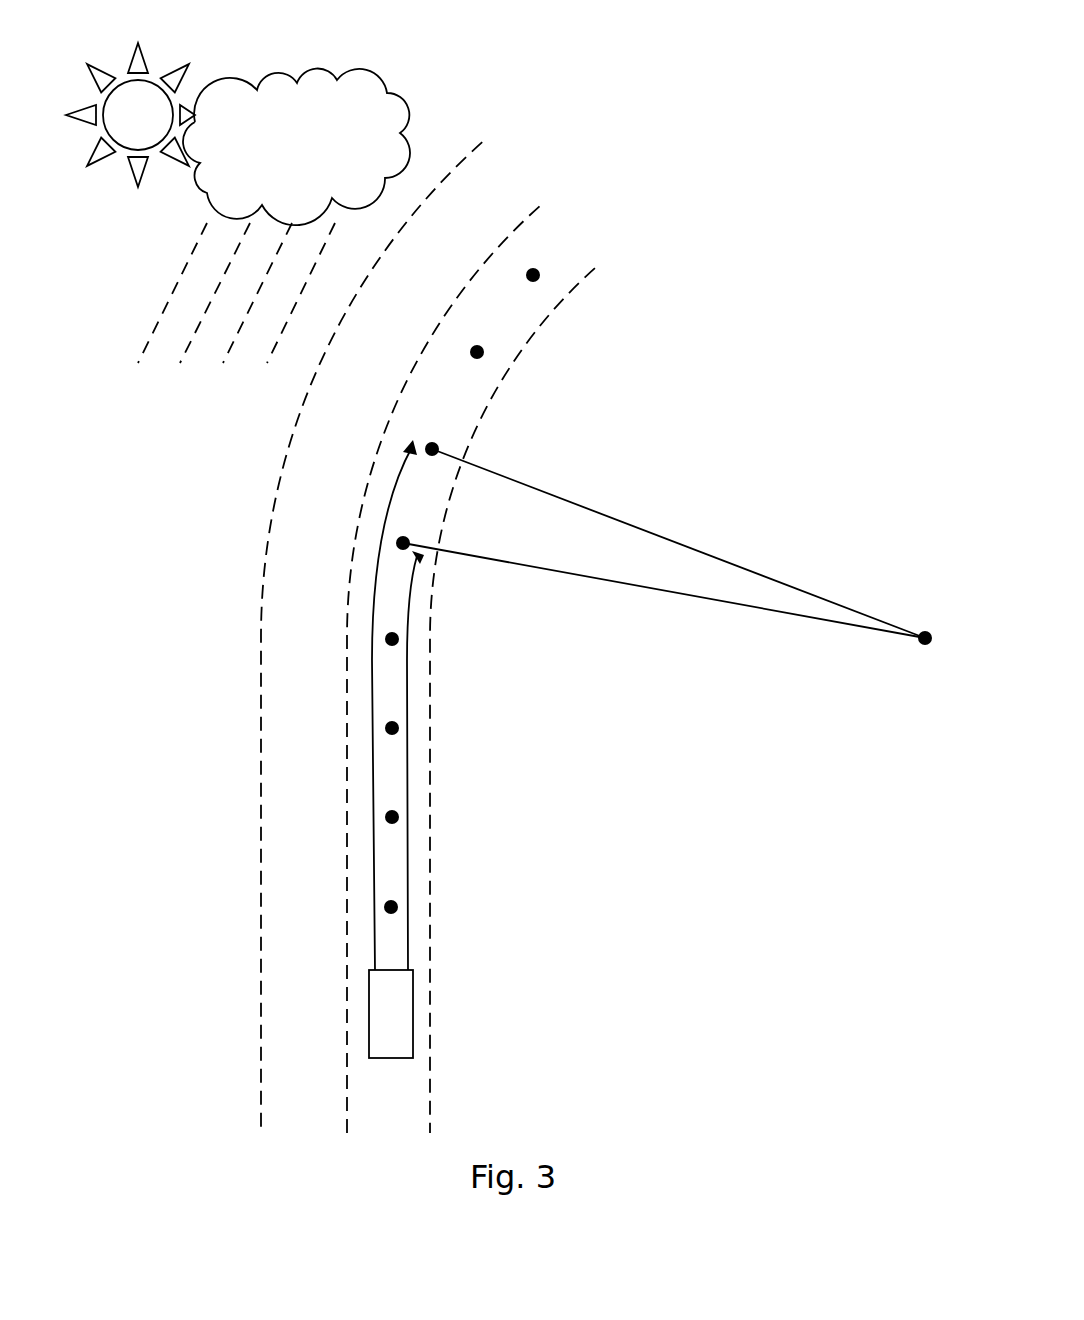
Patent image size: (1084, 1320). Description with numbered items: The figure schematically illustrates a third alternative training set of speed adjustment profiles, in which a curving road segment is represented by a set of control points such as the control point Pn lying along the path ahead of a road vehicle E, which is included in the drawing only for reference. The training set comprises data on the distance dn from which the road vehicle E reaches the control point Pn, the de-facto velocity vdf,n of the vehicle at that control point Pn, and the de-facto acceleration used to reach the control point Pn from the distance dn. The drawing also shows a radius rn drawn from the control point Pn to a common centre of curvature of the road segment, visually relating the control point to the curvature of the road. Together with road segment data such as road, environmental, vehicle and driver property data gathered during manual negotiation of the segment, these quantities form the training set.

The road vehicle E is at (391, 1014).
The distance to control point Pn dn is at (407, 697).
The control point Pn is at (415, 525).
The radius of curvature at point n rn is at (664, 585).
The de-facto velocity at control point Pn vdf,n is at (420, 560).